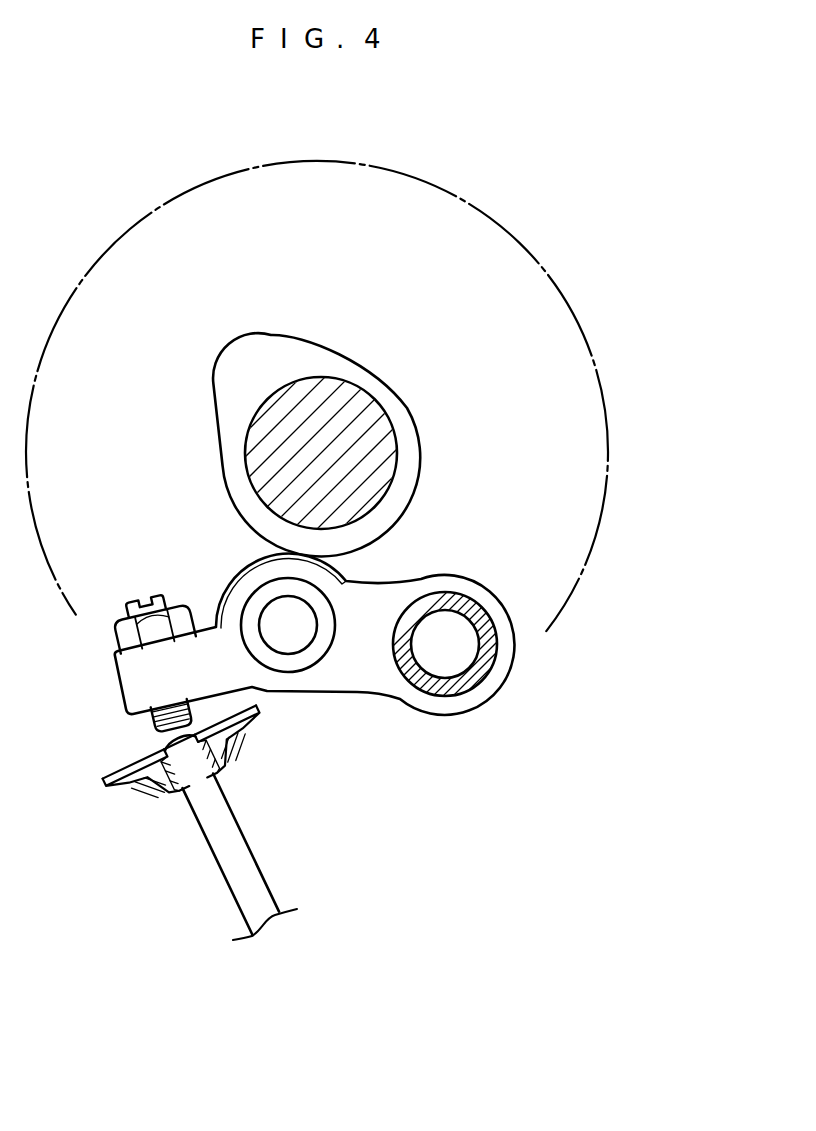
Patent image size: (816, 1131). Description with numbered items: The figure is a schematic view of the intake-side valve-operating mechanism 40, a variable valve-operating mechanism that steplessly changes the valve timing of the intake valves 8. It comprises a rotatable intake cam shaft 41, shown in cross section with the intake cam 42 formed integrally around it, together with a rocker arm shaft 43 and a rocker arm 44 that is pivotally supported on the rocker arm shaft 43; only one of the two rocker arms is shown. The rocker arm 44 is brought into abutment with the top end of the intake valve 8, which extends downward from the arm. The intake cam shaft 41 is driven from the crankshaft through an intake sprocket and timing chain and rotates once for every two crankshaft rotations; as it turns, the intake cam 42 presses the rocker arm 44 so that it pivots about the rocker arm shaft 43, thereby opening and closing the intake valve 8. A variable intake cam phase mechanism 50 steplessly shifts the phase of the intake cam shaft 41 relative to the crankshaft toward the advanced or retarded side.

The intake-side valve-operating mechanism 40 is at (605, 231).
The variable intake cam phase mechanism 50 is at (580, 324).
The intake cam 42 is at (272, 333).
The intake cam shaft 41 is at (348, 395).
The rocker arm shaft 43 is at (487, 673).
The rocker arm 44 is at (354, 693).
The intake valve 8 is at (213, 860).